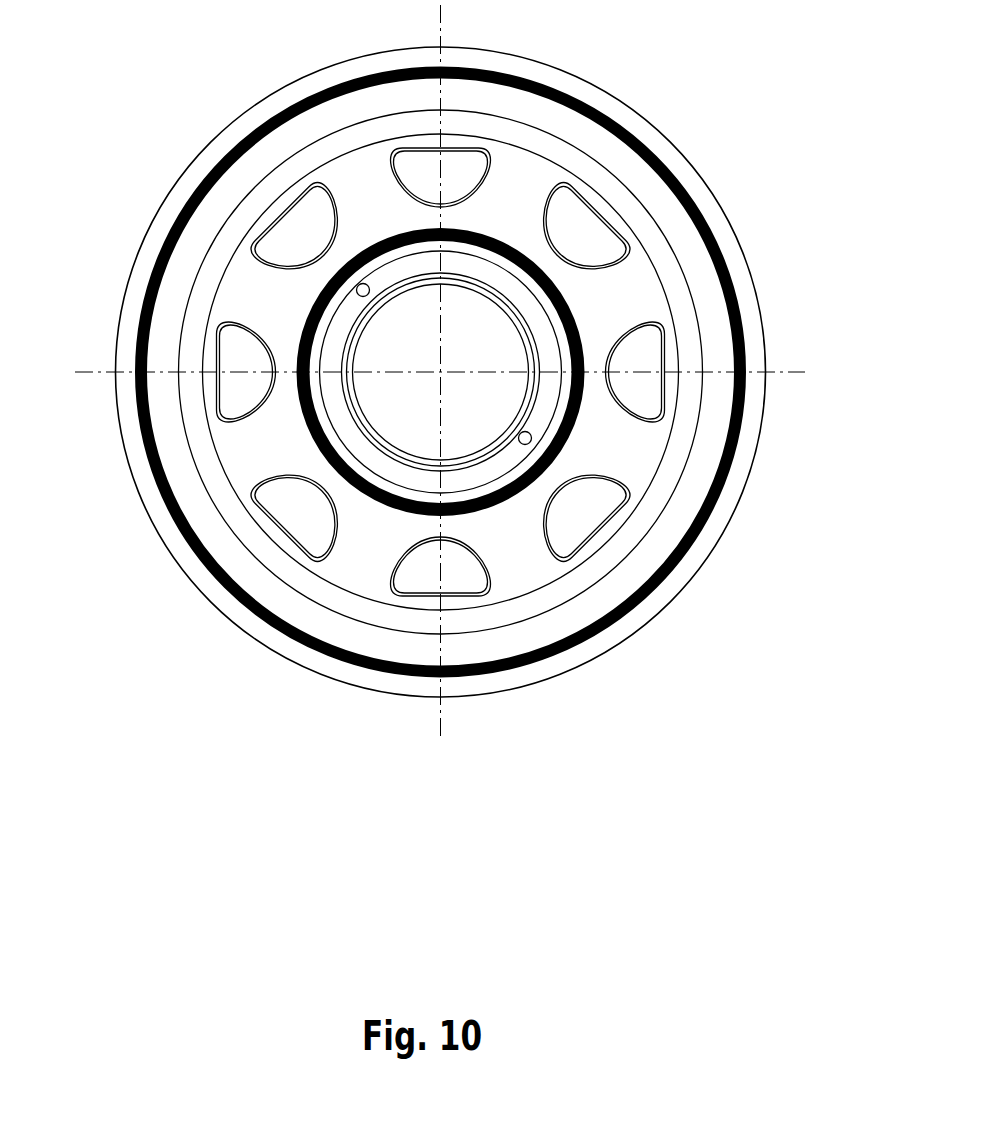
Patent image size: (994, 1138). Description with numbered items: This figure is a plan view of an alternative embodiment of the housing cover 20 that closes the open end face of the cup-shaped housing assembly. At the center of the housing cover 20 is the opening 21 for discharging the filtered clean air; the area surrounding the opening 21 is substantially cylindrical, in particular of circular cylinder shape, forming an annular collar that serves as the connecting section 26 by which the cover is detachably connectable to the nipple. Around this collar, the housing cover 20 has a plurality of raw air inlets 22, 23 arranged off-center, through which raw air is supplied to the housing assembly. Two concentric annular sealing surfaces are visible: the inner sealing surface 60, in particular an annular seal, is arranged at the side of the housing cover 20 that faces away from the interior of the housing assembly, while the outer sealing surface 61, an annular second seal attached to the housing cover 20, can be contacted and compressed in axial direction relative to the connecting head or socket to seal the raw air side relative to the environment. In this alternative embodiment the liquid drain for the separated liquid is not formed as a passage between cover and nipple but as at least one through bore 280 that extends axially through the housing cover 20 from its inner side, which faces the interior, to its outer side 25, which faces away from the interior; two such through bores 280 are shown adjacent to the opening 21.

The housing cover 20 is at (681, 128).
The opening 21 is at (408, 412).
The raw air inlet 22 is at (297, 232).
The raw air inlet 23 is at (587, 507).
The outer side of the housing cover 25 is at (518, 216).
The connecting section 26 is at (447, 277).
The sealing surface 60 is at (582, 415).
The outer sealing surface 61 is at (530, 667).
The through bore 280 is at (519, 434).